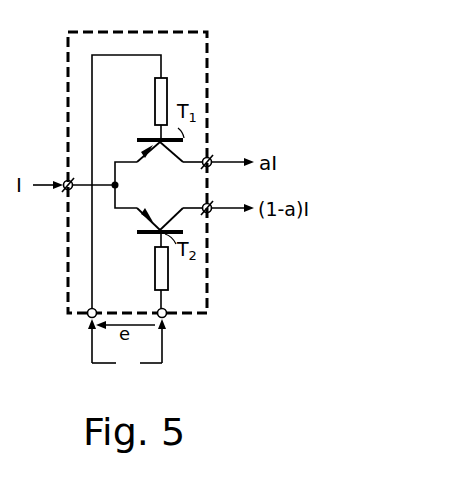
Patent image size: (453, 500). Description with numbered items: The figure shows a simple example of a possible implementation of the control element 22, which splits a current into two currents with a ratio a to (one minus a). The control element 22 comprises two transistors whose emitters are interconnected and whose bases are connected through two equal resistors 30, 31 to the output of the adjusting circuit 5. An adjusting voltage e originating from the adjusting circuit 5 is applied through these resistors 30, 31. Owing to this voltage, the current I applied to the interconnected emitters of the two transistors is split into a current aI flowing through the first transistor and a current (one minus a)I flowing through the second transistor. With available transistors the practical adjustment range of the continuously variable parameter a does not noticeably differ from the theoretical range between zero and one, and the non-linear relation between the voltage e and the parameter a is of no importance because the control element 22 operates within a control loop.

The control element 22 is at (150, 32).
The resistor 30 is at (155, 100).
The resistor 31 is at (155, 272).
The adjusting circuit 5 is at (127, 347).